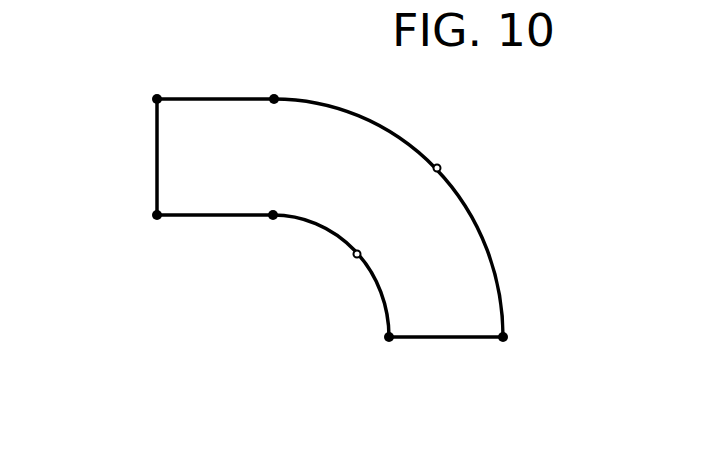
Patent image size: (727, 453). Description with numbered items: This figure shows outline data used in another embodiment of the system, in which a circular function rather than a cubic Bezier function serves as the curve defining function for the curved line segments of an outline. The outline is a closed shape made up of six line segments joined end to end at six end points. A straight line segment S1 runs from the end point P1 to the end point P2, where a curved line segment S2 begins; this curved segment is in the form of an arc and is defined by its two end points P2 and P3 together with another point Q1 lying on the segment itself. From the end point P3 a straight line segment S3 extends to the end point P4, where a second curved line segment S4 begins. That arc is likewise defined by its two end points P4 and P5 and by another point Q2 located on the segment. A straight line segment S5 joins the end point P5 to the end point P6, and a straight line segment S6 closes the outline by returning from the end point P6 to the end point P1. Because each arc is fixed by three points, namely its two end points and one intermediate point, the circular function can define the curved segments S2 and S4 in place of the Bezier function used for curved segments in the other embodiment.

The end point P1 is at (160, 233).
The end point P2 is at (281, 232).
The end point P3 is at (395, 355).
The end point P4 is at (510, 355).
The end point P5 is at (288, 83).
The end point P6 is at (163, 83).
The another point on the line segment Q1 is at (382, 247).
The another point on the line segment Q2 is at (462, 164).
The line segment S1 is at (210, 216).
The curved line segment S2 is at (378, 287).
The line segment S3 is at (443, 338).
The curved line segment S4 is at (480, 223).
The line segment S5 is at (226, 97).
The line segment S6 is at (157, 157).